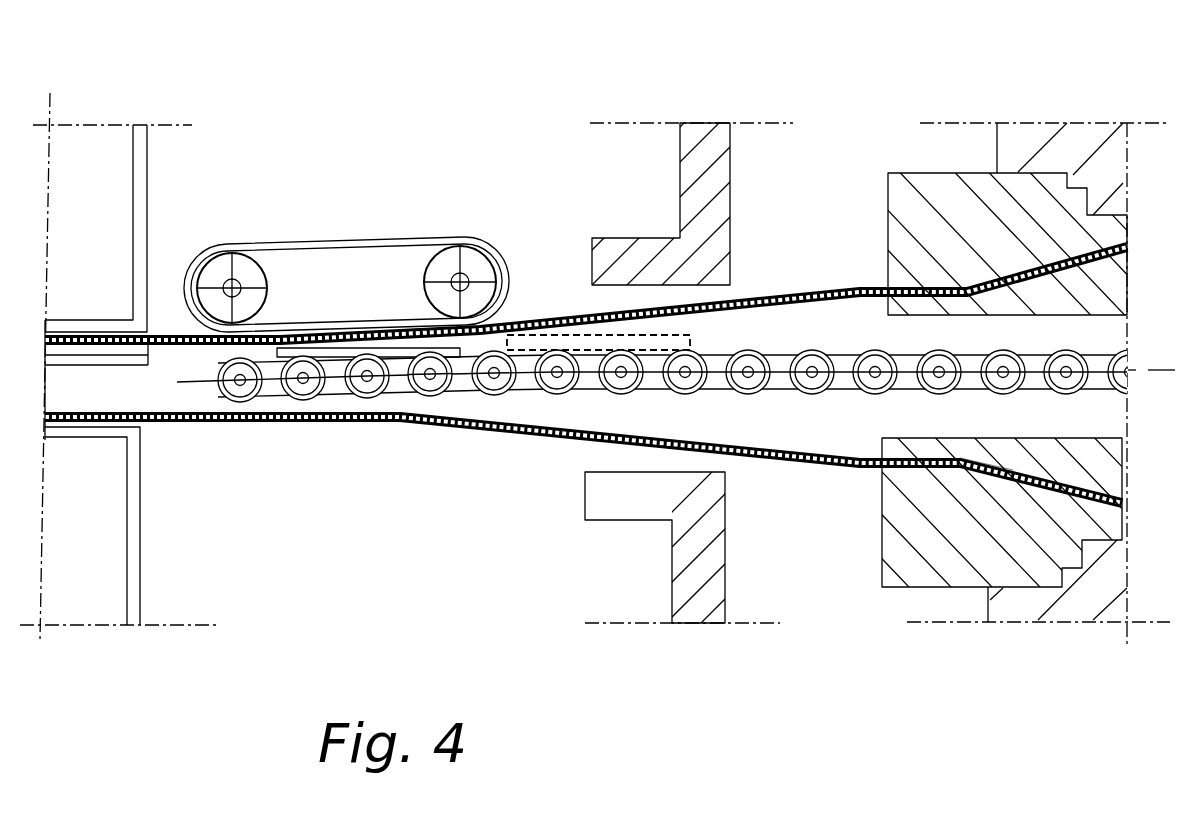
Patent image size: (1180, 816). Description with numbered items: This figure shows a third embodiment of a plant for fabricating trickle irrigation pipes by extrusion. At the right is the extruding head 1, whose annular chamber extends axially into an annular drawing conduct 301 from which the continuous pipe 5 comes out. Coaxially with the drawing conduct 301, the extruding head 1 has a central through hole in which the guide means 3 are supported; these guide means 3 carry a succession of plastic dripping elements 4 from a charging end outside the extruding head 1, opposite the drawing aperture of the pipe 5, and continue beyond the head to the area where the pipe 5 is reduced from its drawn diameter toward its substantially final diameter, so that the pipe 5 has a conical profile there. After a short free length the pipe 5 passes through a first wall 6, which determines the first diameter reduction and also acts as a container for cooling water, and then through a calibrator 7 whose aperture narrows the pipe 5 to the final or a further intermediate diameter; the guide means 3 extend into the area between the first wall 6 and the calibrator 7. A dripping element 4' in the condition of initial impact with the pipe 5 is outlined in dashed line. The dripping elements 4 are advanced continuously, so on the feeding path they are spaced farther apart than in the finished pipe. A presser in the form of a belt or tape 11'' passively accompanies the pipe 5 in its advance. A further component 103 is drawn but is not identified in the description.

The extruding head 1 is at (1093, 118).
The guide means 3 is at (968, 390).
The dripping elements 4 is at (368, 312).
The dripping element in initial impact condition 4' is at (598, 288).
The pipe 5 is at (807, 477).
The first wall 6 is at (735, 203).
The calibrator 7 is at (152, 163).
The belt or tape 11'' is at (346, 237).
The chain roller 103 is at (432, 398).
The annular drawing conduct 301 is at (1013, 487).